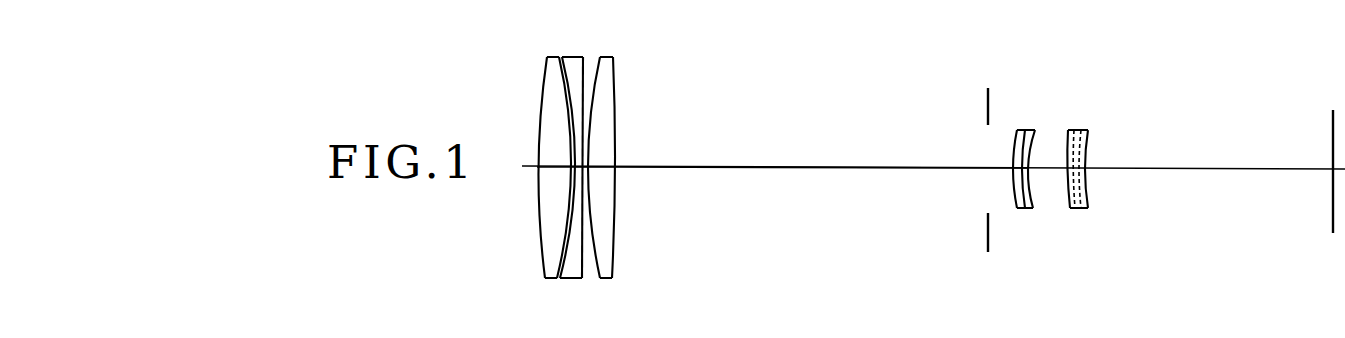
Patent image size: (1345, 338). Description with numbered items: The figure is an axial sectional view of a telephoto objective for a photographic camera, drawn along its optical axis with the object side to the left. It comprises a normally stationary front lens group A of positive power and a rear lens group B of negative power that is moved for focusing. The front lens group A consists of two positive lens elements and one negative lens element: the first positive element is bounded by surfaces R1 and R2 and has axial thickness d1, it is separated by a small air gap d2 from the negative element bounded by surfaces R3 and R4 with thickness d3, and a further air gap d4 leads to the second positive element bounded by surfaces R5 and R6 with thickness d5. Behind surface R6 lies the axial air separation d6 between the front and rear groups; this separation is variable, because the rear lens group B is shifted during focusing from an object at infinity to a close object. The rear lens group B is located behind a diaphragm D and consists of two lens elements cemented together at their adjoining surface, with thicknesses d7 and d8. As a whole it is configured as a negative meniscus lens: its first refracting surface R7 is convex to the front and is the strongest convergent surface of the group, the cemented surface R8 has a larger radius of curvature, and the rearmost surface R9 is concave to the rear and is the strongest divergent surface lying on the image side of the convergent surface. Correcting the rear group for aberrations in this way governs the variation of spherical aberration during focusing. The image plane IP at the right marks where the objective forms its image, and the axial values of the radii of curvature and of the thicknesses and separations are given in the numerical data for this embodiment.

The front lens group A is at (577, 170).
The rear lens group B is at (1072, 75).
The diaphragm D is at (987, 93).
The image plane IP is at (1332, 133).
The first refracting surface R1 is at (540, 242).
The second refracting surface R2 is at (553, 267).
The third refracting surface R3 is at (562, 279).
The fourth refracting surface R4 is at (583, 279).
The fifth refracting surface R5 is at (602, 279).
The sixth refracting surface R6 is at (613, 262).
The convergent surface R7 is at (1013, 192).
The cemented surface R8 is at (1022, 209).
The divergent surface R9 is at (1033, 209).
The axial lens thickness d1 is at (572, 160).
The air separation d2 is at (572, 148).
The axial lens thickness d3 is at (583, 162).
The air separation d4 is at (588, 163).
The axial lens thickness d5 is at (594, 168).
The variable air separation d6 is at (814, 156).
The axial lens thickness d7 is at (1015, 168).
The axial lens thickness d8 is at (1030, 168).